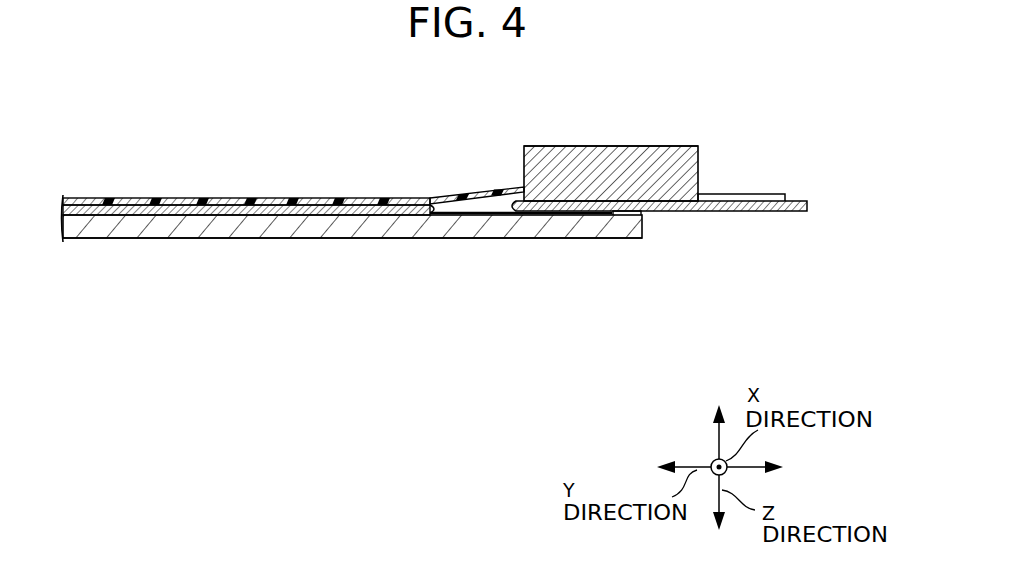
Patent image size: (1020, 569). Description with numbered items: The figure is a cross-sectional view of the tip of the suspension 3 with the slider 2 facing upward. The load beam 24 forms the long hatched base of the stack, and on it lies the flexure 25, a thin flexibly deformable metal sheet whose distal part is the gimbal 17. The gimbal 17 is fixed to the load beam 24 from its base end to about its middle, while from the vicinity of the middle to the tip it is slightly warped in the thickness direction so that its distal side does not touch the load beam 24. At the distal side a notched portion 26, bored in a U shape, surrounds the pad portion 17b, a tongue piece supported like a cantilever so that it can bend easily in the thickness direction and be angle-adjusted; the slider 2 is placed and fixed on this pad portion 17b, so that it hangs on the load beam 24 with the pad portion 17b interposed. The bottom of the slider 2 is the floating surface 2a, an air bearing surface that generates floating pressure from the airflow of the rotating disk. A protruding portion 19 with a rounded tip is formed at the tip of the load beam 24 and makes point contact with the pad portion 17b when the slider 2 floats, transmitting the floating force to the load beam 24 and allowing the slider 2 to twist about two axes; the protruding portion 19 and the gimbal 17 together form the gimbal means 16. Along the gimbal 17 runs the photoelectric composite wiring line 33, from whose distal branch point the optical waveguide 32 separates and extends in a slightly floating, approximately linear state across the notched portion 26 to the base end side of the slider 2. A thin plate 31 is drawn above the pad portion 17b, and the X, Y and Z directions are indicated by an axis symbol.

The slider 2 is at (604, 165).
The floating surface 2a is at (658, 146).
The suspension 3 is at (268, 228).
The gimbal means 16 is at (550, 242).
The gimbal 17 is at (337, 165).
The pad portion 17b is at (656, 212).
The protruding portion 19 is at (622, 214).
The load beam 24 is at (352, 273).
The flexure 25 is at (215, 204).
The notched portion 26 is at (431, 207).
The support plate 31 is at (736, 196).
The optical waveguide 32 is at (489, 186).
The photoelectric composite wiring line 33 is at (111, 193).